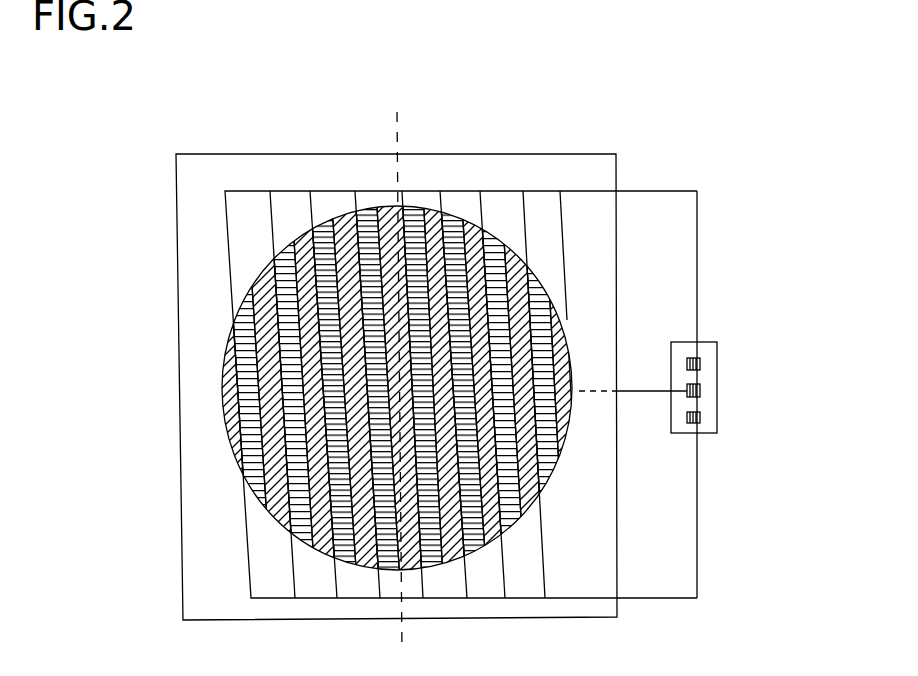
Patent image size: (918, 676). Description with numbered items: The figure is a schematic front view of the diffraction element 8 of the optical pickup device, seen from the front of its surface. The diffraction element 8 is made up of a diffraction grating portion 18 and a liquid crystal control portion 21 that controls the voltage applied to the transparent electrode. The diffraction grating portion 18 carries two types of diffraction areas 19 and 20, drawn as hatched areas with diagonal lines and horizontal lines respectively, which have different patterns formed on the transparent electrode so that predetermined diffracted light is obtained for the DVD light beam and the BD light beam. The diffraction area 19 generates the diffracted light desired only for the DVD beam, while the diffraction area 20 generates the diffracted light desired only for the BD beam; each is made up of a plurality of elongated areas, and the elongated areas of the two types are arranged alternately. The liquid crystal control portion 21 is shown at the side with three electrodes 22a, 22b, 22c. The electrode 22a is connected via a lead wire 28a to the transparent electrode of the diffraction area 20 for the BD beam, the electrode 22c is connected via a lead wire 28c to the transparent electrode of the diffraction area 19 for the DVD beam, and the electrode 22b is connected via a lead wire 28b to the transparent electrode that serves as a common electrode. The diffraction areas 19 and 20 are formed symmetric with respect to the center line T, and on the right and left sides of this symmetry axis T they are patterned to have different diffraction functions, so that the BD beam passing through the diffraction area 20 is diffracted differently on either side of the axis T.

The diffraction element 8 is at (617, 167).
The diffraction grating portion 18 is at (222, 373).
The diffraction area 19 is at (424, 210).
The diffraction area 20 is at (346, 201).
The liquid crystal control portion 21 is at (703, 343).
The electrode 22a is at (700, 368).
The electrode 22b is at (700, 395).
The electrode 22c is at (697, 423).
The lead wire 28a is at (697, 246).
The lead wire 28b is at (625, 395).
The lead wire 28c is at (697, 575).
The center line T is at (402, 624).